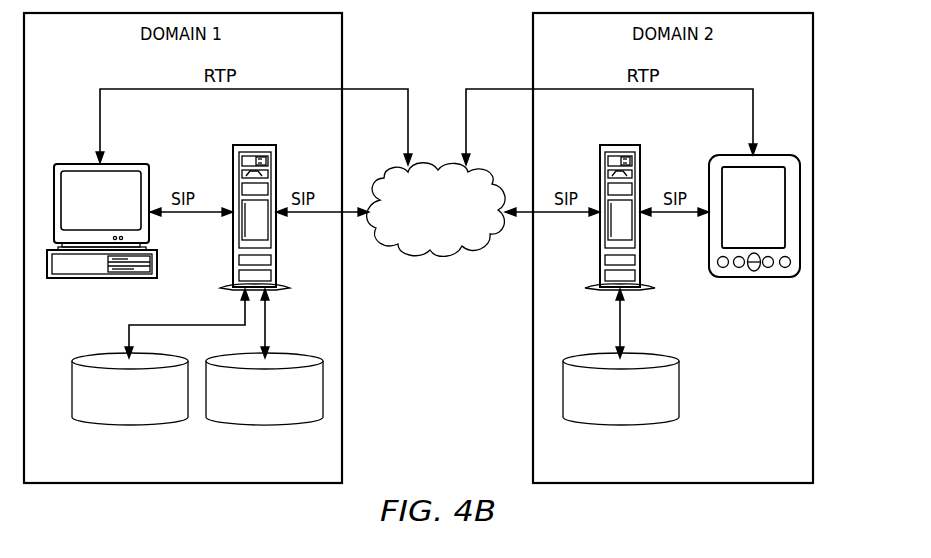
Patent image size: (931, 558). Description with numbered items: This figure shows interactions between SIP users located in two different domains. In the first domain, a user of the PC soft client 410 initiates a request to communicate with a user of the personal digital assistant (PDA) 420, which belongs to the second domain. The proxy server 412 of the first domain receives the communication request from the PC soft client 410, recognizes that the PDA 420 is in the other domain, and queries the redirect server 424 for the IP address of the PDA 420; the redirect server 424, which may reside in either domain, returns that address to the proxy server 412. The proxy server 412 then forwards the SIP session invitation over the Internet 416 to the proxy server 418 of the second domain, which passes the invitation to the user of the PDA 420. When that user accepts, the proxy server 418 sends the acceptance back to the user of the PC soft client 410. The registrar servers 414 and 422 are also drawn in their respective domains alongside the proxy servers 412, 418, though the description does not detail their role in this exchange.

The PC soft client 410 is at (75, 164).
The proxy server 412 is at (233, 257).
The registrar server 414 is at (118, 428).
The Internet 416 is at (440, 259).
The proxy server 418 is at (625, 290).
The personal digital assistant 420 is at (773, 155).
The registrar server 422 is at (633, 428).
The redirect server 424 is at (277, 428).